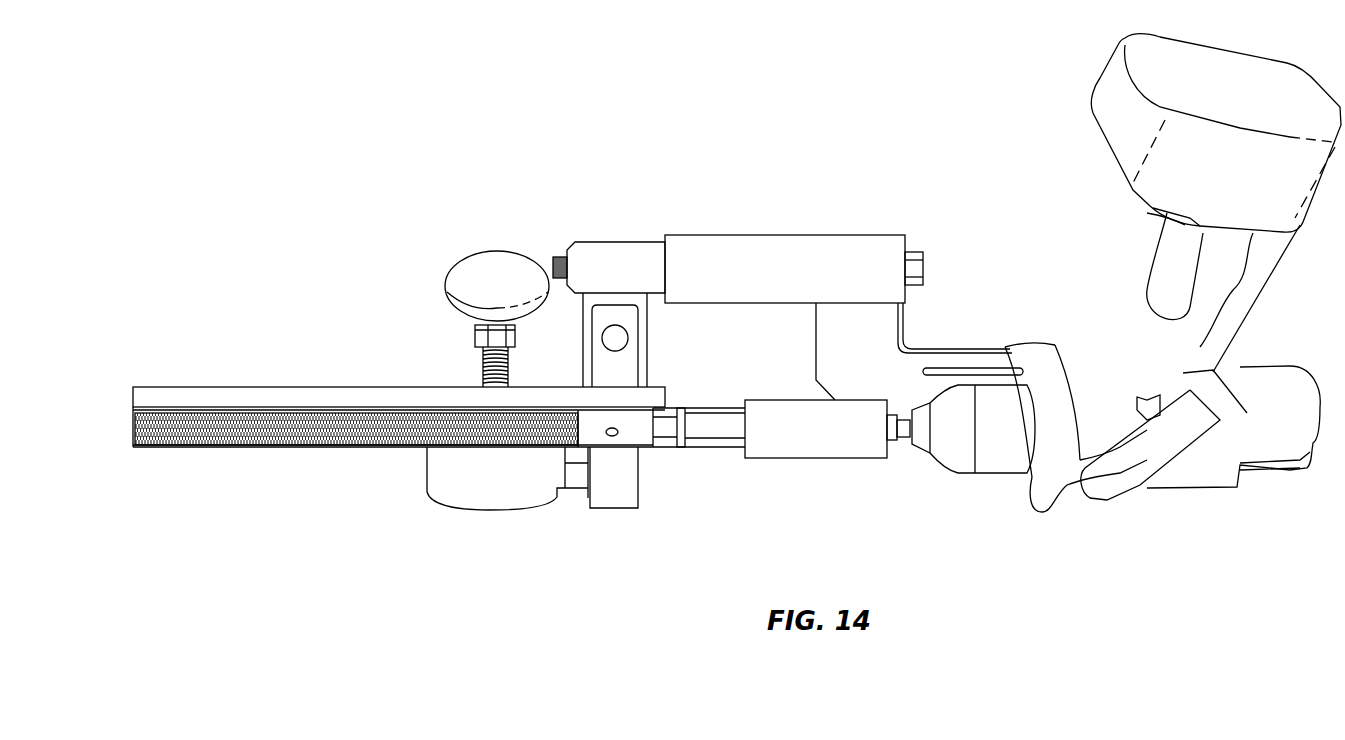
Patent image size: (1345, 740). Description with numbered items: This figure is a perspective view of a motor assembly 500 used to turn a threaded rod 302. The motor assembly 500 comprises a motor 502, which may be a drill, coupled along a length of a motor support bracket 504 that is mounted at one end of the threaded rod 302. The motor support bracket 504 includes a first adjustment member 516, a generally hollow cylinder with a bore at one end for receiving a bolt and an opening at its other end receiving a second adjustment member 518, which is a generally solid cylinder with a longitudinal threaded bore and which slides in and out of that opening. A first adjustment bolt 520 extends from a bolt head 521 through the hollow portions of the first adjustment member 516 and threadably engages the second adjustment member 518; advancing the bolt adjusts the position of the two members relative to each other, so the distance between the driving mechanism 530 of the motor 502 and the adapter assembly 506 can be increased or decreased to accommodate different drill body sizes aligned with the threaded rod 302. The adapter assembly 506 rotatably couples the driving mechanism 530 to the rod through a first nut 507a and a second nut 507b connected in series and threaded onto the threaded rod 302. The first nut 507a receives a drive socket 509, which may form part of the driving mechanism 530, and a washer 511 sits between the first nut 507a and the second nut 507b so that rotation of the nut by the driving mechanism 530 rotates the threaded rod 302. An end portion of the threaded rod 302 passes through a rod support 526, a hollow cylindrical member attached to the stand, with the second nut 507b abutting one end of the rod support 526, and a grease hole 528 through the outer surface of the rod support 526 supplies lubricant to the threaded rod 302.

The motor assembly 500 is at (655, 78).
The threaded rod 302 is at (340, 438).
The motor 502 is at (1158, 262).
The motor support bracket 504 is at (948, 352).
The adapter assembly 506 is at (792, 464).
The first adapter nut 507a is at (672, 407).
The second adapter nut 507b is at (727, 445).
The drive socket 509 is at (857, 440).
The washer 511 is at (682, 448).
The first adjustment member 516 is at (753, 236).
The second adjustment member 518 is at (620, 243).
The first adjustment bolt 520 is at (555, 258).
The bolt head 521 is at (915, 253).
The rod support 526 is at (600, 443).
The grease hole 528 is at (620, 435).
The driving mechanism 530 is at (900, 410).